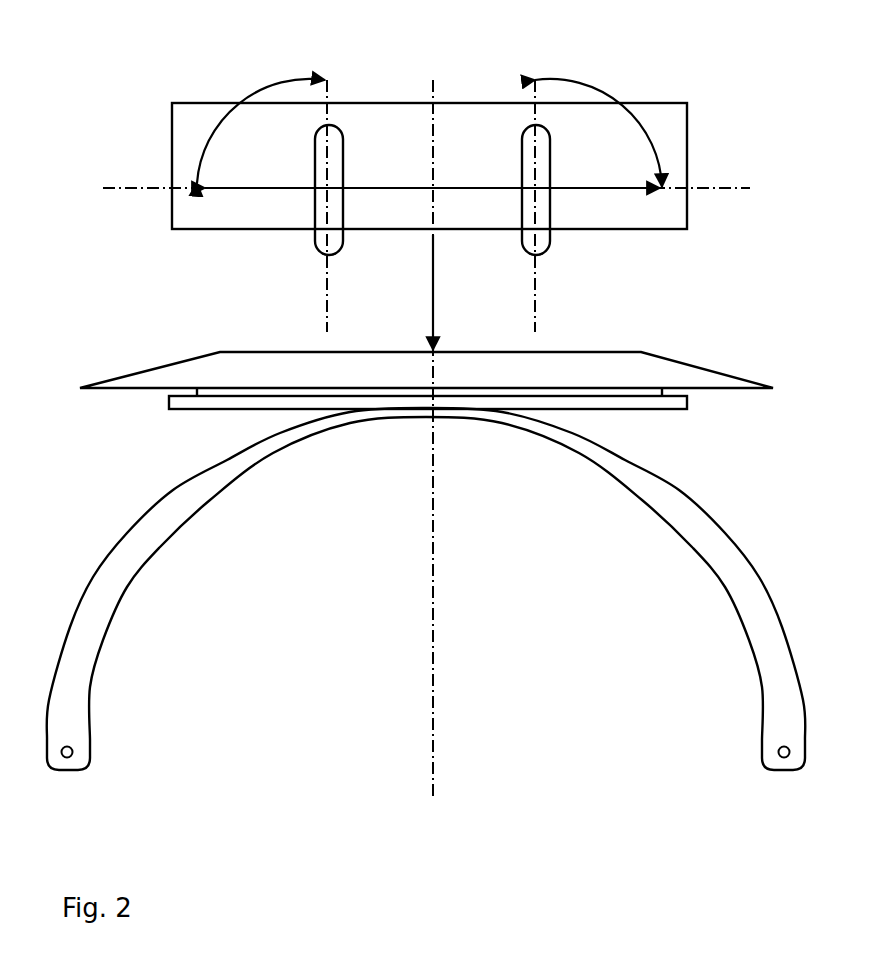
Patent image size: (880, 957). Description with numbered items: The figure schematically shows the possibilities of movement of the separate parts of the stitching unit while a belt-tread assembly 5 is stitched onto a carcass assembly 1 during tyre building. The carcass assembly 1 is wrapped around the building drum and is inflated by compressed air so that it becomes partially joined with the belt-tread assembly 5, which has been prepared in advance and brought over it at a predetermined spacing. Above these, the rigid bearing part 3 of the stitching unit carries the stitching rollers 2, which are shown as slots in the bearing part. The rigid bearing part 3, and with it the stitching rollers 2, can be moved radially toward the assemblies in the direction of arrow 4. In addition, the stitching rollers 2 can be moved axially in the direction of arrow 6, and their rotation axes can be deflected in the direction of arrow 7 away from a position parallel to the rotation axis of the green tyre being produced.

The carcass assembly 1 is at (173, 490).
The stitching rollers 2 is at (311, 246).
The rigid bearing part 3 is at (478, 135).
The arrow 4 is at (435, 298).
The belt-tread assembly 5 is at (178, 363).
The arrow 6 is at (577, 188).
The arrow 7 is at (216, 128).